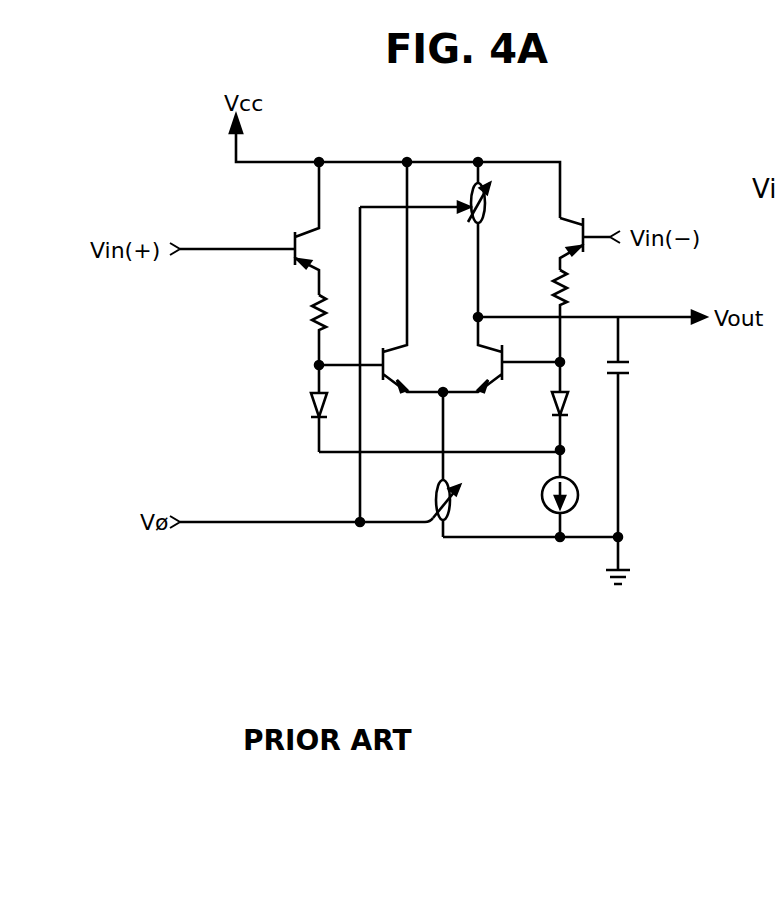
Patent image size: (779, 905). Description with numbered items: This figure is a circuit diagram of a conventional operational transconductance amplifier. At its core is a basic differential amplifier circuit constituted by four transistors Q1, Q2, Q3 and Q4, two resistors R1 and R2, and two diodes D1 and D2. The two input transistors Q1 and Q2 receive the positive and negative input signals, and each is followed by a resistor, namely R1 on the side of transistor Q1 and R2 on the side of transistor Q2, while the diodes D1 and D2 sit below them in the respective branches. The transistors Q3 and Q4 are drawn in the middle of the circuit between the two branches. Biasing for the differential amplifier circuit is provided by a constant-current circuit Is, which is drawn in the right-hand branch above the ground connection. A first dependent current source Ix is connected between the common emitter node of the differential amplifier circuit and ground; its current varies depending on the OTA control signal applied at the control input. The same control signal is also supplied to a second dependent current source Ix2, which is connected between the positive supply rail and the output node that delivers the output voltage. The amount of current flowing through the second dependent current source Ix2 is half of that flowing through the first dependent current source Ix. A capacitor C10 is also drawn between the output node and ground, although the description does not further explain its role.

The transistor Q1 is at (323, 228).
The transistor Q2 is at (568, 244).
The transistor Q3 is at (413, 277).
The transistor Q4 is at (501, 354).
The resistor R1 is at (300, 330).
The resistor R2 is at (576, 316).
The diode D1 is at (298, 408).
The diode D2 is at (539, 406).
The capacitor C10 is at (642, 427).
The first dependent current source Ix is at (455, 464).
The second dependent current source Ix2 is at (516, 205).
The constant-current circuit Is is at (572, 493).